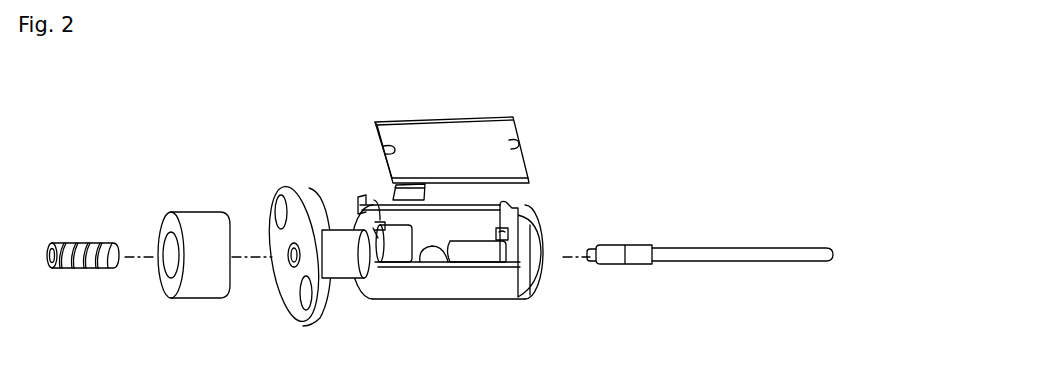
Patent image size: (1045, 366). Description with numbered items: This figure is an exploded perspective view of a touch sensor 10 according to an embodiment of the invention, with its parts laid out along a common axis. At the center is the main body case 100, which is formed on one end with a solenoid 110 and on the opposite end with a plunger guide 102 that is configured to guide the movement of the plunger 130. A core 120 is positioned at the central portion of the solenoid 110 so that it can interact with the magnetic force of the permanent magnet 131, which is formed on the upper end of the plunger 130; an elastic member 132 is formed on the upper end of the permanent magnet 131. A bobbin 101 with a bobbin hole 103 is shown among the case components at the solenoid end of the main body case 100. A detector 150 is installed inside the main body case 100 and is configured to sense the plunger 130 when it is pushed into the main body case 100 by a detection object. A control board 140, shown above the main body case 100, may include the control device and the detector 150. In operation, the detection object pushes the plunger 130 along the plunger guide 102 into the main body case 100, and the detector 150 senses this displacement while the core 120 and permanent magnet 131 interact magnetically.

The touch sensor 10 is at (592, 294).
The main body case 100 is at (455, 290).
The bobbin 101 is at (342, 264).
The plunger guide 102 is at (425, 248).
The bobbin hole 103 is at (290, 266).
The solenoid 110 is at (197, 228).
The core 120 is at (77, 246).
The plunger 130 is at (675, 250).
The permanent magnet 131 is at (608, 252).
The elastic member 132 is at (592, 250).
The control board 140 is at (510, 131).
The detector 150 is at (393, 190).